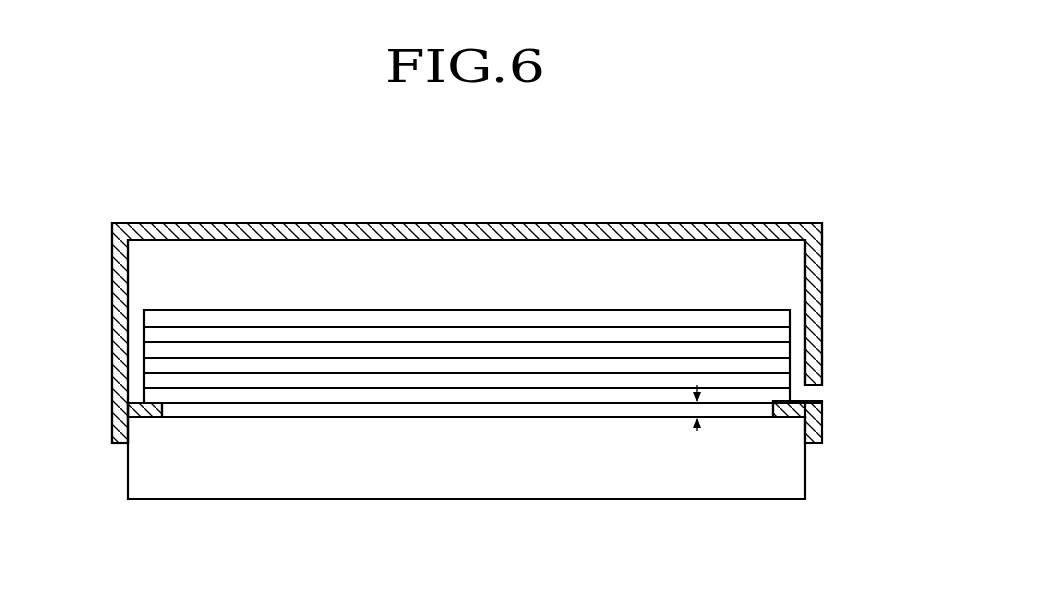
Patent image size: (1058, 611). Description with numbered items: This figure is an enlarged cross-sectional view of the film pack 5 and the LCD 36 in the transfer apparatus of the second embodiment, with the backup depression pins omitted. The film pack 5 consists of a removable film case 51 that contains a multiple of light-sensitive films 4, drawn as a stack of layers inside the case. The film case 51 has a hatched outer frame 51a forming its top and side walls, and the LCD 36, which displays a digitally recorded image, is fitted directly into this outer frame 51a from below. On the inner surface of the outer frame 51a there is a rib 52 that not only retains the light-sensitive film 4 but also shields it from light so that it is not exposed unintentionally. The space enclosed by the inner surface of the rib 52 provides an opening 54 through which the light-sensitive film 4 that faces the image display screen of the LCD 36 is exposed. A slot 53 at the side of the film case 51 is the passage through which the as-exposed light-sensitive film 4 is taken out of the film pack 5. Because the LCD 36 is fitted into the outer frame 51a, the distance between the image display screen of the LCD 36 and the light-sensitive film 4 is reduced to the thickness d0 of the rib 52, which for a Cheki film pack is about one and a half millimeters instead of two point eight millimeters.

The film pack 5 is at (709, 176).
The film case 51 is at (822, 252).
The outer frame 51a is at (118, 445).
The light-sensitive film 4 is at (168, 396).
The slot 53 is at (813, 393).
The LCD 36 is at (806, 475).
The rib 52 is at (153, 417).
The opening 54 is at (265, 408).
The thickness of the rib d0 is at (712, 423).